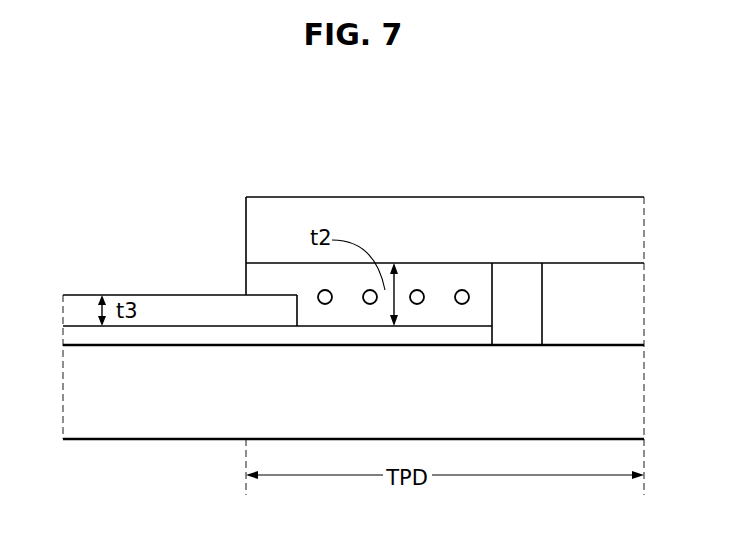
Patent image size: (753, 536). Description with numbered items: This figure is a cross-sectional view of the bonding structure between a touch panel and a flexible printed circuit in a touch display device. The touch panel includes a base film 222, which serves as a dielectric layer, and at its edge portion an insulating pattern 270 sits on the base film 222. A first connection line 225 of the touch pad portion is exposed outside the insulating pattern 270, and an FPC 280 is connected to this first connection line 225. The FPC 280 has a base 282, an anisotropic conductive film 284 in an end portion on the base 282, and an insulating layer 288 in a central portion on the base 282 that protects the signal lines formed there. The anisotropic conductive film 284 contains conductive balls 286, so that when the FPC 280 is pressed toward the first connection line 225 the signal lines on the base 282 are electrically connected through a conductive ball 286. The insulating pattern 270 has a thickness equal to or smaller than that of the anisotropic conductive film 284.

The base film 222 is at (118, 425).
The first connection line 225 is at (291, 330).
The insulating pattern 270 is at (180, 315).
The FPC 280 is at (363, 113).
The base 282 is at (360, 210).
The anisotropic conductive film 284 is at (445, 282).
The conductive ball 286 is at (472, 288).
The insulating layer 288 is at (602, 282).